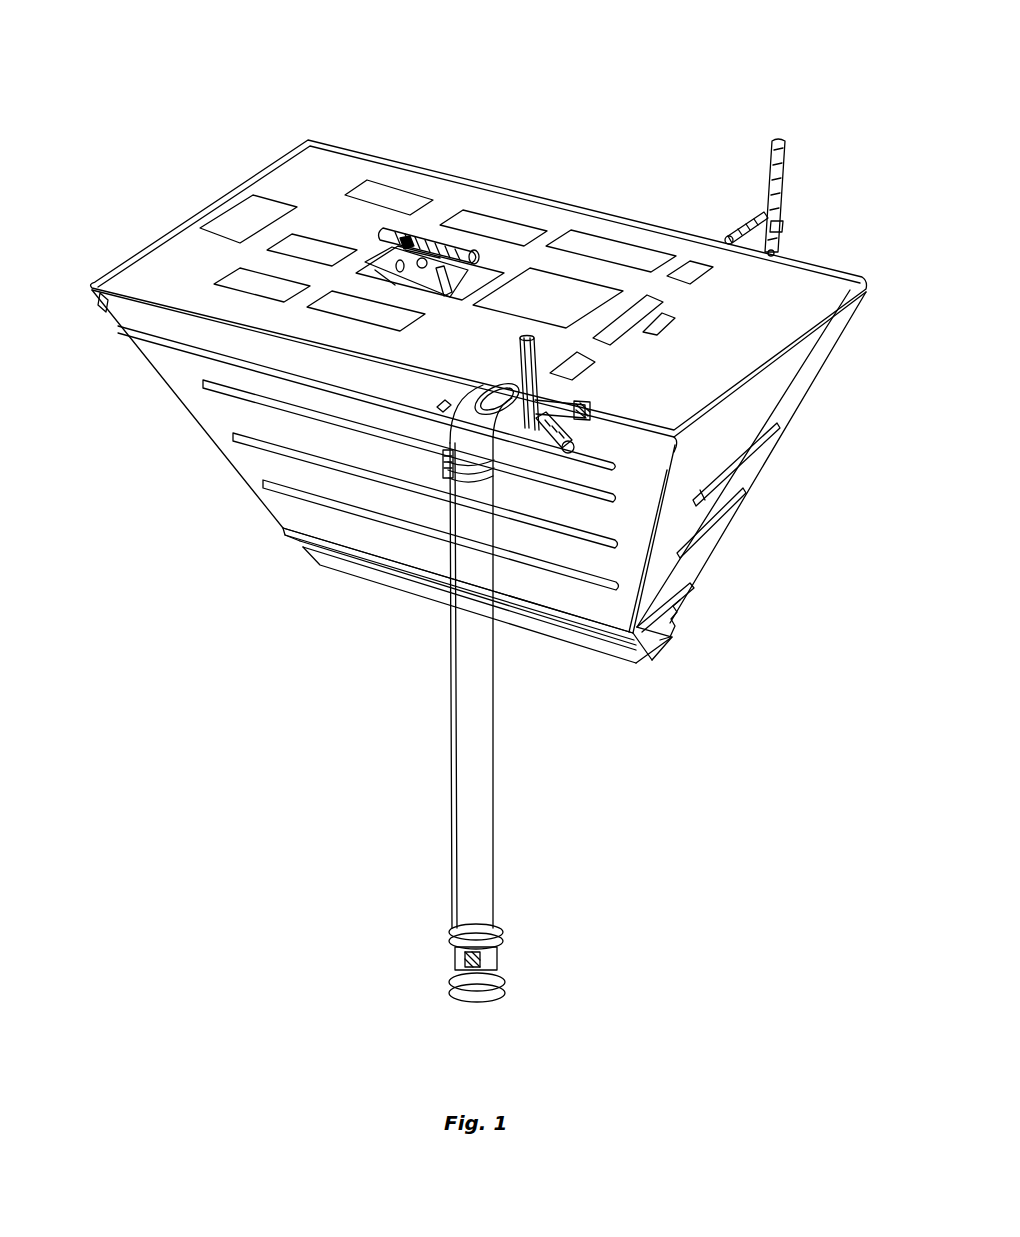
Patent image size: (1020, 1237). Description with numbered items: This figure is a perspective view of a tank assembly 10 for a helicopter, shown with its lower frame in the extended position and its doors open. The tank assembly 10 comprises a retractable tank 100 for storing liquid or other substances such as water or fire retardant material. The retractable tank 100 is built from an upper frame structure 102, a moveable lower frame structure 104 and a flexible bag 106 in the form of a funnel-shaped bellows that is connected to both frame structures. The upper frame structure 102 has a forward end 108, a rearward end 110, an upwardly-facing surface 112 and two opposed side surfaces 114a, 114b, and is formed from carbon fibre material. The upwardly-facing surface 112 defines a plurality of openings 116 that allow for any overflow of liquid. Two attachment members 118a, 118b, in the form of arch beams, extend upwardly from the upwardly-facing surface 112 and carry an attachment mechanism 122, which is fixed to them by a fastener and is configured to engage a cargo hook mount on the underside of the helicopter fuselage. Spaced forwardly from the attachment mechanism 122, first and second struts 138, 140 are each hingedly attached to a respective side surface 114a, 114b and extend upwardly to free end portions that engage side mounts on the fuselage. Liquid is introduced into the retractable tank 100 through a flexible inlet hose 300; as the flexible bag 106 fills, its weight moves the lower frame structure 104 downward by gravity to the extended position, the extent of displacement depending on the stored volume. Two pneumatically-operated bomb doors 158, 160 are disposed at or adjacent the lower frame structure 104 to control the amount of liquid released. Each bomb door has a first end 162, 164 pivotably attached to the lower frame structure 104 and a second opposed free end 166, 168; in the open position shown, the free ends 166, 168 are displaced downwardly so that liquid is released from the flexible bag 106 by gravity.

The tank assembly 10 is at (150, 54).
The retractable tank 100 is at (228, 186).
The upper frame structure 102 is at (128, 292).
The lower frame structure 104 is at (283, 528).
The flexible bag 106 is at (212, 442).
The forward end 108 is at (712, 428).
The rearward end 110 is at (152, 242).
The upwardly-facing surface 112 is at (345, 163).
The side surface 114a is at (222, 347).
The side surface 114b is at (535, 195).
The openings 116 is at (628, 252).
The attachment member 118a is at (460, 283).
The attachment member 118b is at (483, 268).
The attachment mechanism 122 is at (435, 232).
The first strut 138 is at (527, 413).
The second strut 140 is at (774, 190).
The bomb door 158 is at (356, 570).
The bomb door 160 is at (672, 618).
The first end 162 is at (650, 640).
The first end 164 is at (680, 597).
The free end 166 is at (652, 655).
The free end 168 is at (672, 632).
The flexible inlet hose 300 is at (466, 838).